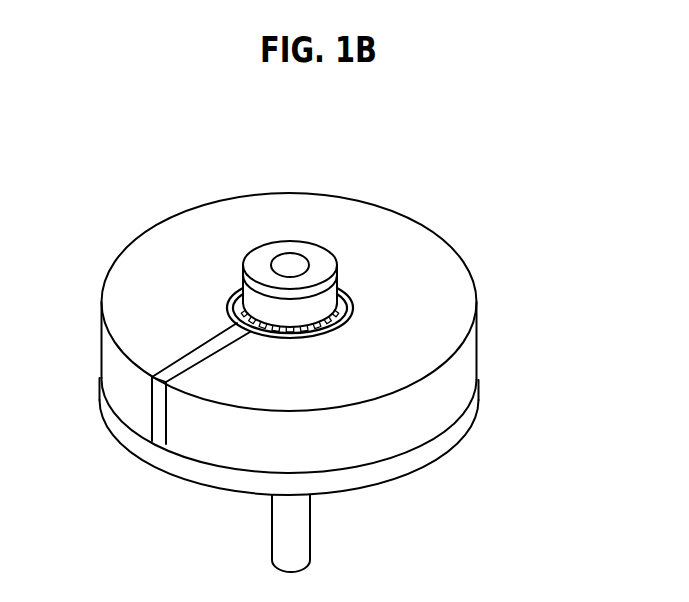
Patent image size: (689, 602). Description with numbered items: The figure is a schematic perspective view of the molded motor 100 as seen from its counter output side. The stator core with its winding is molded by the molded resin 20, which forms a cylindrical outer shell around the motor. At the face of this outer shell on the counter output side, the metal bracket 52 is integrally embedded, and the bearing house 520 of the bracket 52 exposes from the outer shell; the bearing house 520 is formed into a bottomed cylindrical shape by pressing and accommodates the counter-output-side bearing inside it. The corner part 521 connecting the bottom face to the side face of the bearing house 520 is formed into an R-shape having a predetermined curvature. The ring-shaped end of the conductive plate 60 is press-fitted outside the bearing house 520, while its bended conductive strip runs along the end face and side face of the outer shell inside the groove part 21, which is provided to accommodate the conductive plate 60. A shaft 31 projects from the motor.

The molded motor 100 is at (510, 205).
The molded resin 20 is at (463, 362).
The groove part 21 is at (182, 367).
The shaft 31 is at (300, 548).
The bracket on the counter output side 52 is at (370, 262).
The bearing house 520 is at (315, 258).
The corner part 521 is at (244, 279).
The conductive plate 60 is at (128, 415).